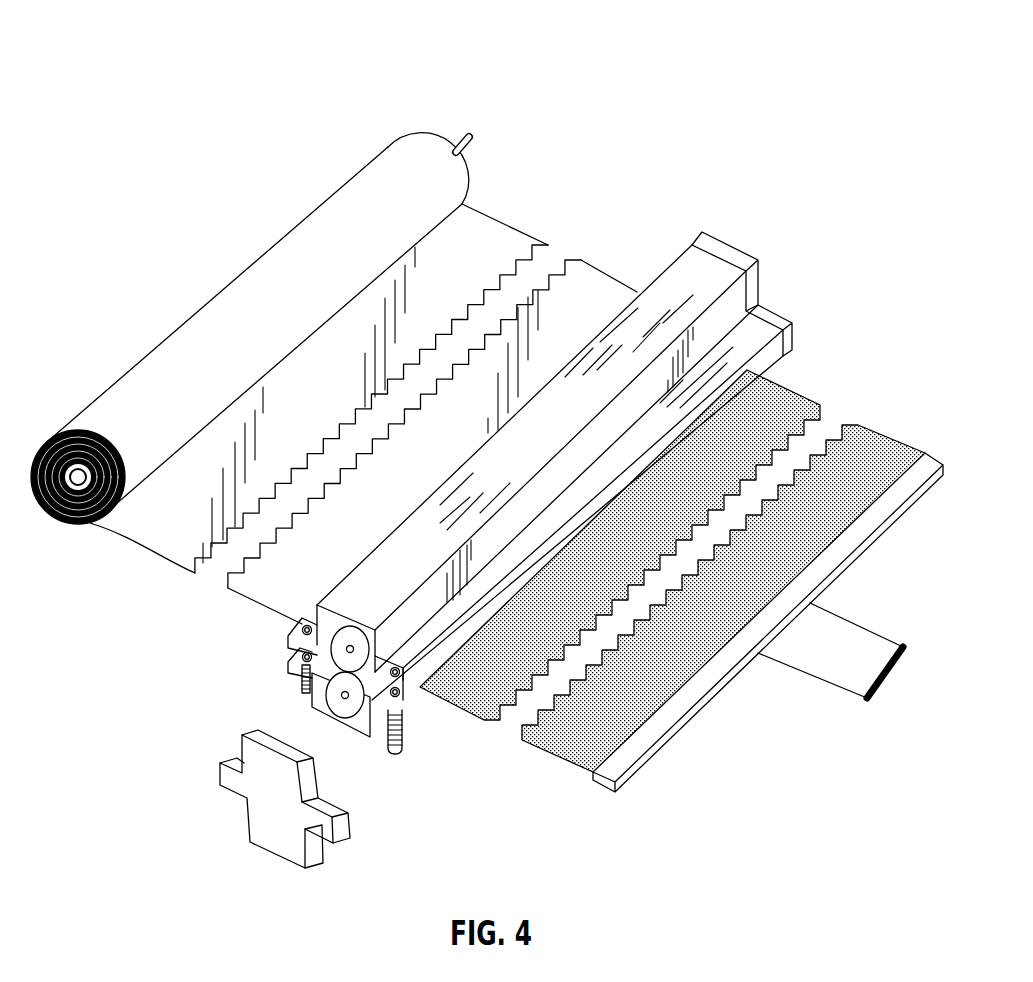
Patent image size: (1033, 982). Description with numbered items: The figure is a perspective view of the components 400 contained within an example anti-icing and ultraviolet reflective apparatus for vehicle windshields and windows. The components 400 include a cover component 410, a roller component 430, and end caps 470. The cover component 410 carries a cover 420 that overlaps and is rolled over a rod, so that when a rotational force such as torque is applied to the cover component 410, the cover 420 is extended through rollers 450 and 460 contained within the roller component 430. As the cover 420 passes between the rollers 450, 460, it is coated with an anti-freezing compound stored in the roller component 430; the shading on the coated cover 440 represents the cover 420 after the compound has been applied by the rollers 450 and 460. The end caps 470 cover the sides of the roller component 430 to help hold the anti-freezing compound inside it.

The components 400 is at (112, 81).
The cover component 410 is at (173, 337).
The cover 420 is at (588, 267).
The roller component 430 is at (667, 293).
The coated cover 440 is at (802, 393).
The roller 450 is at (340, 647).
The roller 460 is at (333, 700).
The end caps 470 is at (747, 267).